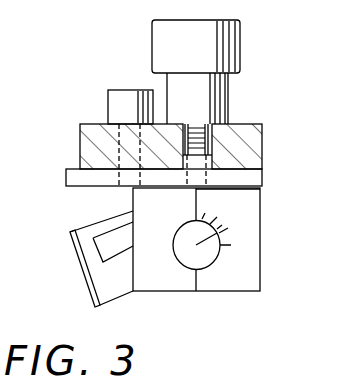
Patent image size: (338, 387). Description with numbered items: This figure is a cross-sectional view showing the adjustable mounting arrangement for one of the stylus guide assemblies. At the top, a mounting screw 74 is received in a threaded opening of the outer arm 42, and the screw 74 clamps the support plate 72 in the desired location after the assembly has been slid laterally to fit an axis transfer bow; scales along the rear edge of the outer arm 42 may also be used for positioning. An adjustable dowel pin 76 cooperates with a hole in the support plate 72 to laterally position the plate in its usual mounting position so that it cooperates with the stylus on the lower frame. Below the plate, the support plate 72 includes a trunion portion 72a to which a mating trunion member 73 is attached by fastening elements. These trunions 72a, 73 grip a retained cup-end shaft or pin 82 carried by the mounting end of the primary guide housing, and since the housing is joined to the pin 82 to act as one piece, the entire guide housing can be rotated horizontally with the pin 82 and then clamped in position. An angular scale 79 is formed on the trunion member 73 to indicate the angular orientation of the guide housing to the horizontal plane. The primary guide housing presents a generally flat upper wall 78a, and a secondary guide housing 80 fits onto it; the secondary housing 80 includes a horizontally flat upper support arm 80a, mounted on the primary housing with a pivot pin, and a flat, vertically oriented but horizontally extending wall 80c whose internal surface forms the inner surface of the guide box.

The mounting screw 74 is at (240, 53).
The adjustable dowel pin 76 is at (108, 97).
The outer arm 42 is at (262, 132).
The support plate 72 is at (252, 175).
The trunion portion 72a is at (170, 291).
The mating trunion member 73 is at (230, 291).
The cup-end shaft or pin 82 is at (217, 260).
The angular scale 79 is at (240, 233).
The secondary guide housing 80 is at (66, 235).
The upper support arm 80a is at (107, 219).
The horizontally extending wall 80c is at (117, 281).
The upper wall 78a is at (100, 253).